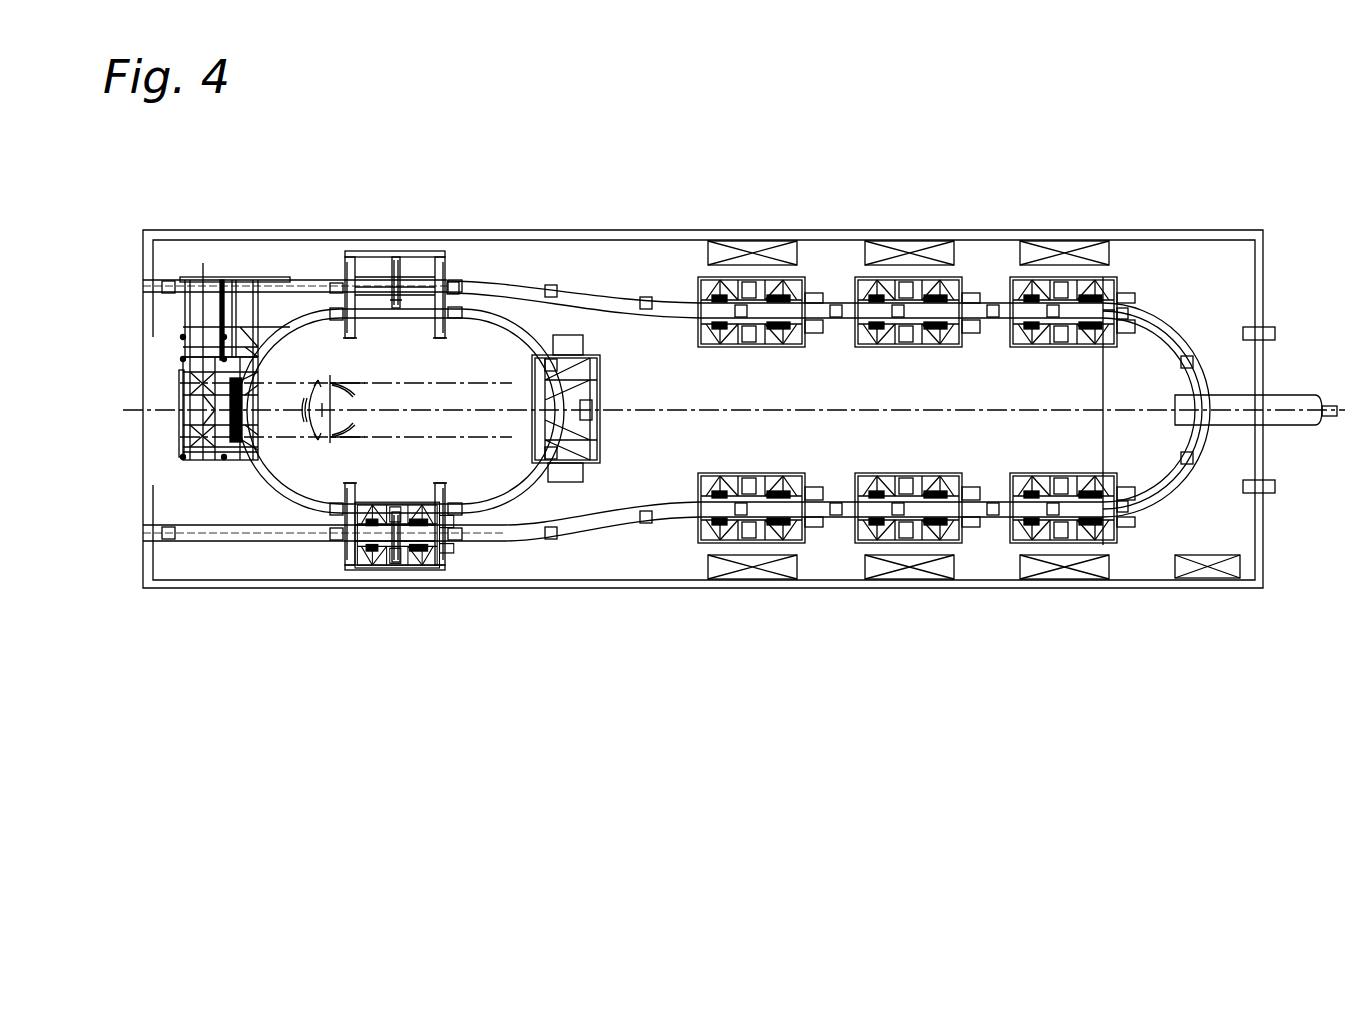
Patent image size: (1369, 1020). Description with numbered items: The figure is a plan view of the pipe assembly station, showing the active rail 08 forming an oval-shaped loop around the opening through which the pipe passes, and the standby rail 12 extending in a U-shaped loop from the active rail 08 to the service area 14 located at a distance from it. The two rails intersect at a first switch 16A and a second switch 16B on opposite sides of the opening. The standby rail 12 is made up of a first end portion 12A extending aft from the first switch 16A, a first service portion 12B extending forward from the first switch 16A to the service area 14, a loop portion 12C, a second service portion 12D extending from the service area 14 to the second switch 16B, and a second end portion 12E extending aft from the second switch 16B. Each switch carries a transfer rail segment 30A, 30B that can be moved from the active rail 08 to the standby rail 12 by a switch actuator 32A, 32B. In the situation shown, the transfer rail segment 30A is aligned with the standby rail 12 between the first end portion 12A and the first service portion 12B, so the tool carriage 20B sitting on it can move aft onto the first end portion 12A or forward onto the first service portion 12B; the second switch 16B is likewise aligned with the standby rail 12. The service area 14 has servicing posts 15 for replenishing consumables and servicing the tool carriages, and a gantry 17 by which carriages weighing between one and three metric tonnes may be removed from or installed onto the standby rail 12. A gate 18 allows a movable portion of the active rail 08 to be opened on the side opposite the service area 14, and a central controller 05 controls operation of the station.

The central controller 05 is at (1208, 562).
The active rail 08 is at (511, 514).
The standby rail 12 is at (1162, 324).
The first end portion 12A is at (266, 548).
The first service portion 12B is at (632, 538).
The loop portion 12C is at (1187, 334).
The second service portion 12D is at (667, 291).
The second end portion 12E is at (265, 276).
The service area 14 is at (986, 561).
The servicing posts 15 is at (905, 251).
The first switch 16A is at (440, 558).
The second switch 16B is at (422, 277).
The gantry 17 is at (1292, 388).
The gate 18 is at (182, 340).
The tool carriage 20B is at (454, 566).
The transfer rail segment 30A is at (363, 563).
The transfer rail segment 30B is at (364, 271).
The switch actuator 32A is at (397, 556).
The switch actuator 32B is at (404, 272).